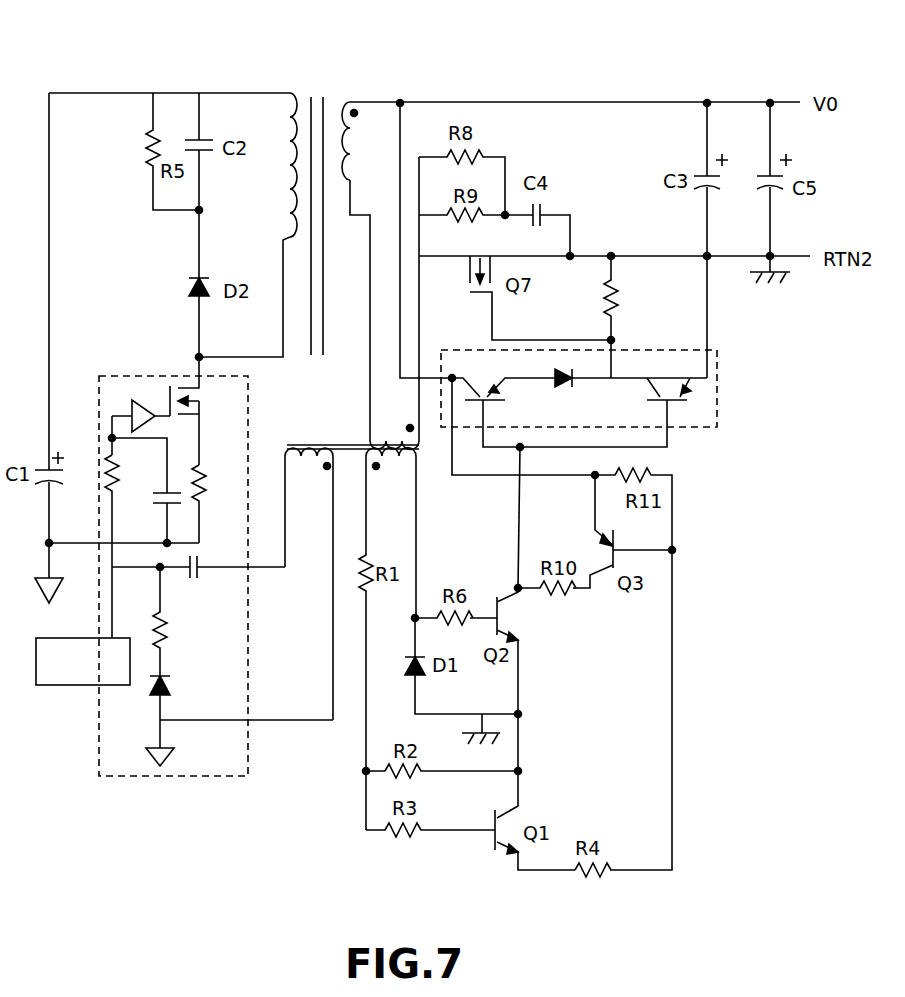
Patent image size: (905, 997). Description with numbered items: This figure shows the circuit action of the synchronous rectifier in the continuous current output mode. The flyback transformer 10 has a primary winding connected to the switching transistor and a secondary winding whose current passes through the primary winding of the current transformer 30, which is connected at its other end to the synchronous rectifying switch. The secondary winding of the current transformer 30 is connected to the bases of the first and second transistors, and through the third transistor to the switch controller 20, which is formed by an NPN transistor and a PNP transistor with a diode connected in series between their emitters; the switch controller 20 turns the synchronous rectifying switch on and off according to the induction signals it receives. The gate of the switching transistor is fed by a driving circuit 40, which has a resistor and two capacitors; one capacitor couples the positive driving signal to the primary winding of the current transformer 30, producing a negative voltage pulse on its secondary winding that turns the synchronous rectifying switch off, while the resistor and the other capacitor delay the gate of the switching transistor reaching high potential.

The flyback transformer 10 is at (311, 84).
The switch controller 20 is at (720, 398).
The current transformer 30 is at (330, 428).
The driving circuit 40 is at (213, 770).